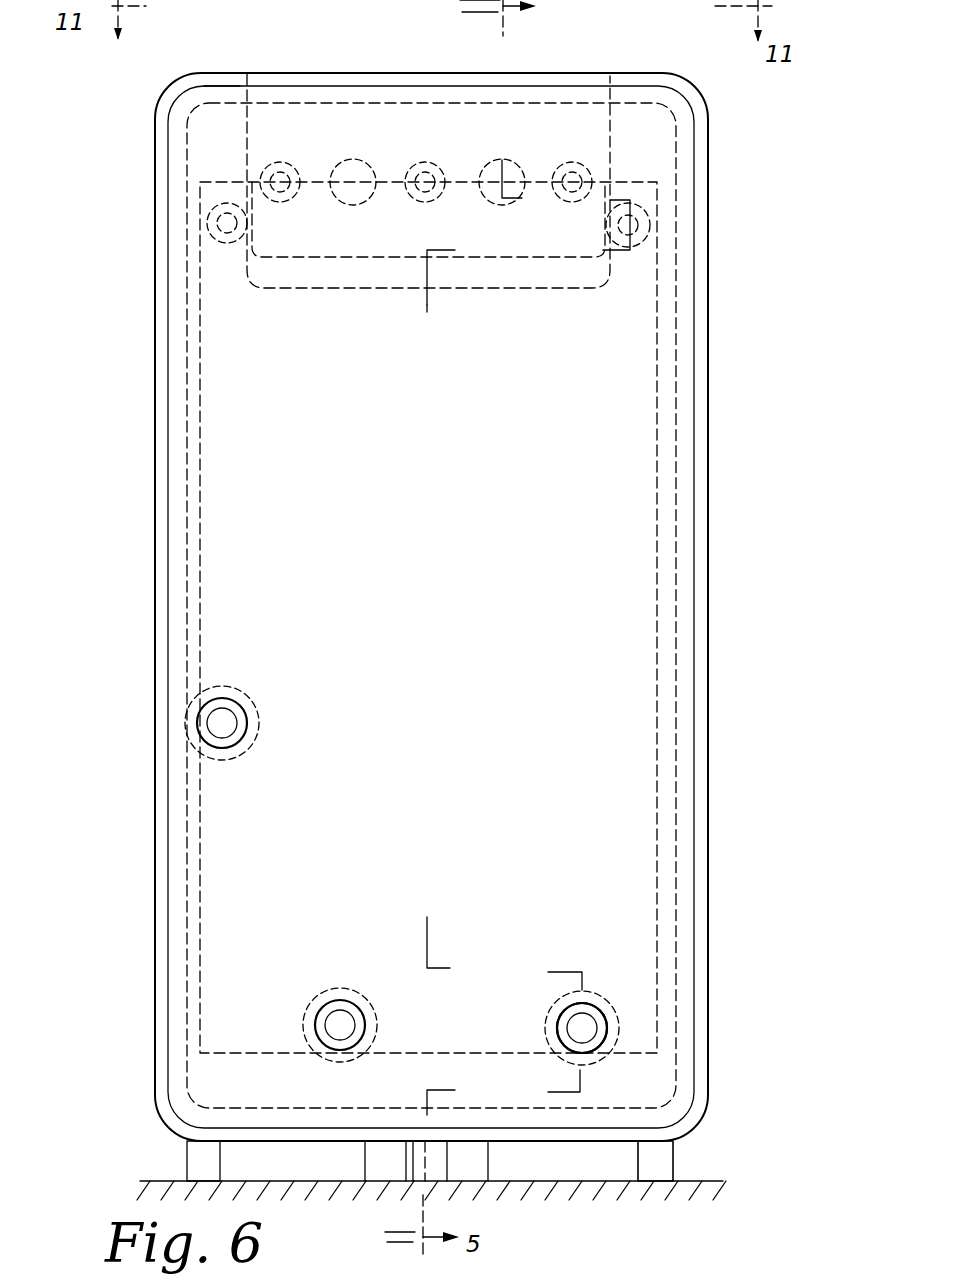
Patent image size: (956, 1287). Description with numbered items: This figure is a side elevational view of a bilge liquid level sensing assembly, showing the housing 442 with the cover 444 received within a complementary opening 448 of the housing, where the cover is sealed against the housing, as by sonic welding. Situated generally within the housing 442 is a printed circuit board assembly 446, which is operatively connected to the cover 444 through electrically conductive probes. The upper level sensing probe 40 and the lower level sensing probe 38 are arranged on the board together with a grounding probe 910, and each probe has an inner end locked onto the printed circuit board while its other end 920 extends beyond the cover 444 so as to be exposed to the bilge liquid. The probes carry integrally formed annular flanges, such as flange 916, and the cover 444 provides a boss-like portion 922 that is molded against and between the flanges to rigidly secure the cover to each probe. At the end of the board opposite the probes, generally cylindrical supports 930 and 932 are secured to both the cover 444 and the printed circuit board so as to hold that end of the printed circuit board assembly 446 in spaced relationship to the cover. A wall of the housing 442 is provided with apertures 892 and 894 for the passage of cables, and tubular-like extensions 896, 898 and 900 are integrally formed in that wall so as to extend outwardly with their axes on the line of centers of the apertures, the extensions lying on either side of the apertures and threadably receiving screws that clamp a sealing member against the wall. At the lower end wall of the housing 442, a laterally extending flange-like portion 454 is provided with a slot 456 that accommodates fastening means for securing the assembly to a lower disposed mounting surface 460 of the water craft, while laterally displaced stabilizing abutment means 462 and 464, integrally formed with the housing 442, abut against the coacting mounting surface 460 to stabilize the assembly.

The housing 442 is at (716, 851).
The cover 444 is at (296, 86).
The complementary opening 448 is at (212, 92).
The printed circuit board assembly 446 is at (190, 387).
The aperture 892 is at (358, 160).
The aperture 894 is at (497, 160).
The tubular-like extension 896 is at (290, 197).
The tubular-like extension 898 is at (434, 197).
The tubular-like extension 900 is at (572, 162).
The cylindrical support 930 is at (648, 240).
The cylindrical support 932 is at (216, 222).
The boss-like portion 922 is at (248, 706).
The upper level sensing probe 40 is at (242, 740).
The grounding probe 910 is at (336, 992).
The probe other end 920 is at (596, 1012).
The annular flange 916 is at (593, 1045).
The lower level sensing probe 38 is at (548, 1029).
The mounting surface 460 is at (690, 1184).
The stabilizing abutment means 462 is at (197, 1150).
The stabilizing abutment means 464 is at (665, 1150).
The flange-like portion 454 is at (488, 1165).
The slot 456 is at (412, 1140).